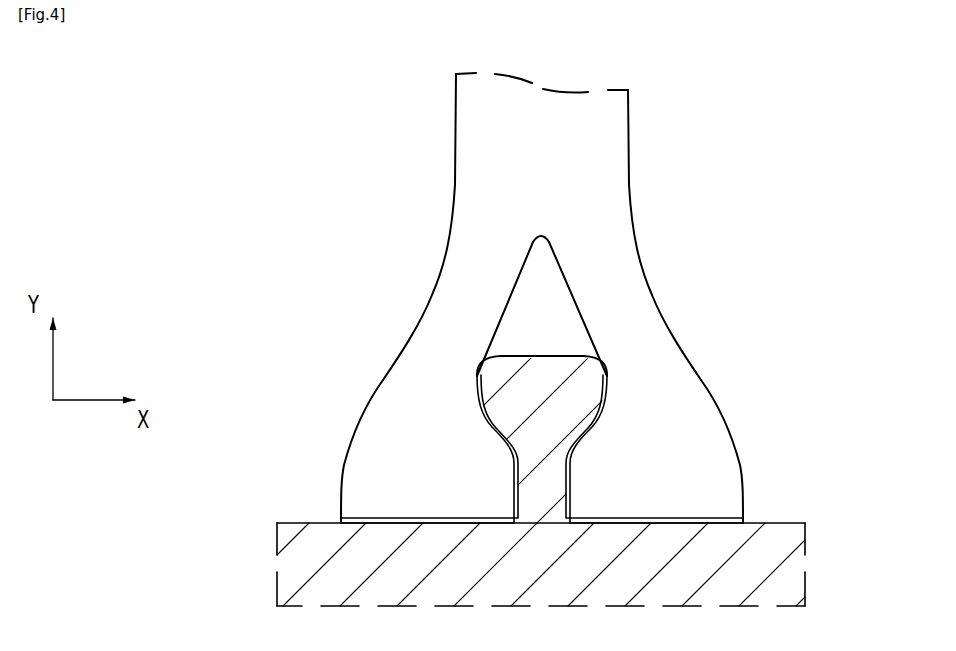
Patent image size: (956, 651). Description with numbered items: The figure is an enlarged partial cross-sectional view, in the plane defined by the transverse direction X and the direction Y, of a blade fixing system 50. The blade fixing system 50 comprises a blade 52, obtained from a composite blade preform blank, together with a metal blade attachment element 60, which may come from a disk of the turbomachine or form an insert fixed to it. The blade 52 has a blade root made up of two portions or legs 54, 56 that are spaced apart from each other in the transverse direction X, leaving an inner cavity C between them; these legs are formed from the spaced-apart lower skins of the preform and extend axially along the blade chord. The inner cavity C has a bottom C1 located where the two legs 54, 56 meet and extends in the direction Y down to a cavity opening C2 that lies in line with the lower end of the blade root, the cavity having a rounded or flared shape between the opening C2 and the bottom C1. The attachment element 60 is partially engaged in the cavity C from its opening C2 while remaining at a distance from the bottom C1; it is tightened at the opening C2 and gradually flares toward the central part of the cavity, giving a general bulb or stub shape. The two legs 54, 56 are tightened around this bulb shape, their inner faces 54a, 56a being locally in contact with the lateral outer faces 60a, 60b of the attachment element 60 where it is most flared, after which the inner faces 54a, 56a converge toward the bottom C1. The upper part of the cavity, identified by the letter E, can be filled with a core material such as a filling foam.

The blade fixing system 50 is at (780, 165).
The blade 52 is at (392, 274).
The first portion or leg of the blade root 54 is at (366, 382).
The inner face of first leg 54a is at (480, 356).
The second portion or leg of the blade root 56 is at (717, 381).
The inner face of second leg 56a is at (603, 360).
The blade attachment element 60 is at (580, 346).
The first lateral outer face of attachment element 60a is at (477, 388).
The second lateral outer face of attachment element 60b is at (610, 390).
The inner cavity C is at (520, 317).
The bottom of the inner cavity C1 is at (542, 236).
The cavity opening C2 is at (572, 515).
The upper part of the inner cavity E is at (555, 287).